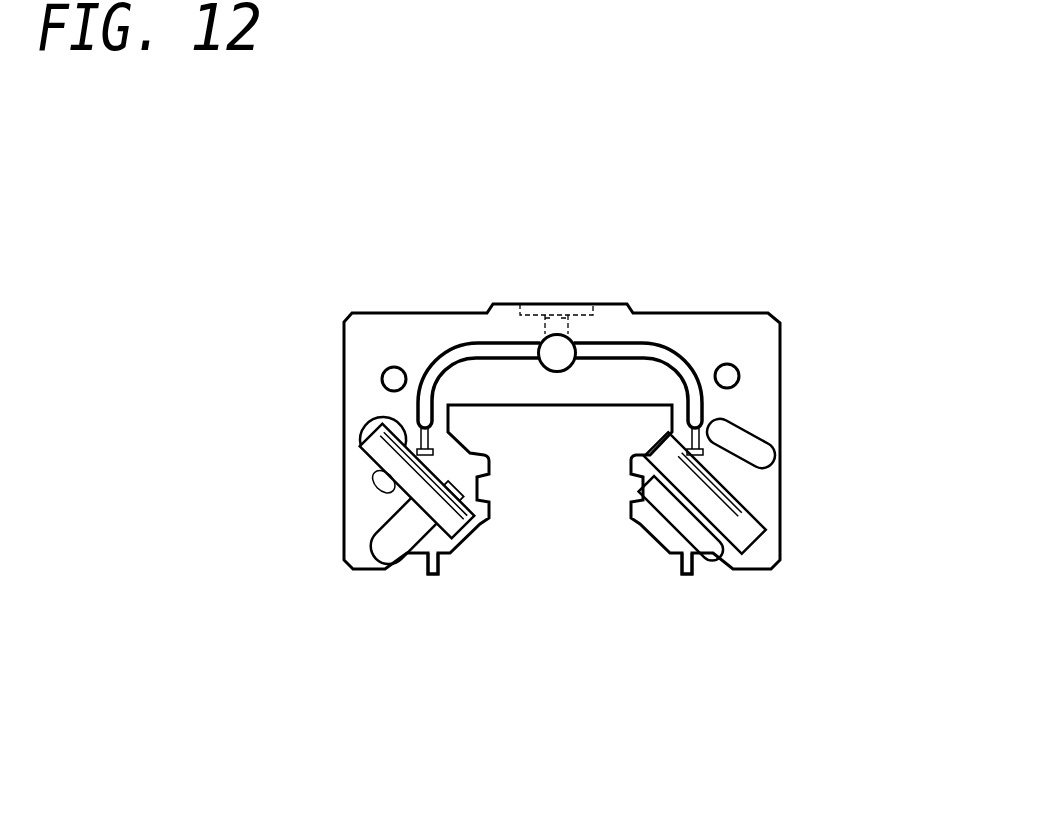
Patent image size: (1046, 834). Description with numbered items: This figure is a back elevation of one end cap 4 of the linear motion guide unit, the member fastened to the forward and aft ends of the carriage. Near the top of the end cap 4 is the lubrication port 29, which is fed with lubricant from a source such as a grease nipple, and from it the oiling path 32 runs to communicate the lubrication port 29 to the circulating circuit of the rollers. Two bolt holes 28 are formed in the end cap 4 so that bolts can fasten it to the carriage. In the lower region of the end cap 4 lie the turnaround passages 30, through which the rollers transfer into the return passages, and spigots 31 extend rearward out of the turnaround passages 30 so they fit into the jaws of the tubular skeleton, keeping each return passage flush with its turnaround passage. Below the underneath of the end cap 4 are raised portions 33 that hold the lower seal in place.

The end cap 4 is at (735, 294).
The bolt holes 28 is at (391, 367).
The lubrication port 29 is at (557, 347).
The turnaround passages 30 is at (395, 517).
The spigots 31 is at (352, 440).
The oiling path 32 is at (626, 347).
The raised portions 33 is at (432, 576).